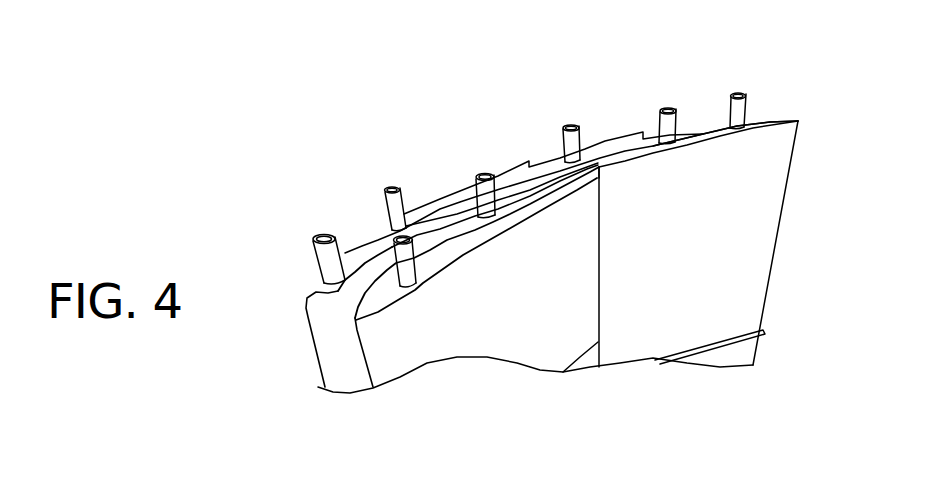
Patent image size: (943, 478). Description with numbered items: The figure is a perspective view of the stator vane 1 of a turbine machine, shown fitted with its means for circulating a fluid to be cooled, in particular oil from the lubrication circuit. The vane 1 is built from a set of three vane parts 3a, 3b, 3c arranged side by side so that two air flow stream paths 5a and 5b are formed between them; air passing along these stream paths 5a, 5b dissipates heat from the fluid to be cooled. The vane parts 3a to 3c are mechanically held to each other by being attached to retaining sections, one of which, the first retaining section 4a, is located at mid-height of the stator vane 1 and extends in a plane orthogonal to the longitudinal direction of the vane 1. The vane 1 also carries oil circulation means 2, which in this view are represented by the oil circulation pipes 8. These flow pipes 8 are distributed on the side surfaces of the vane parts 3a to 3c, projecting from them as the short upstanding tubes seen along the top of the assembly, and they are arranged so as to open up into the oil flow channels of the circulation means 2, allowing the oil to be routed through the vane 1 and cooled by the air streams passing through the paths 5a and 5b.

The vane 1 is at (326, 141).
The circulation means 2 is at (474, 183).
The vane part 3a is at (315, 300).
The vane part 3b is at (450, 236).
The vane part 3c is at (690, 137).
The first retaining section 4a is at (583, 363).
The air flow stream path 5a is at (338, 321).
The air flow stream path 5b is at (593, 165).
The oil circulation pipes 8 is at (322, 260).